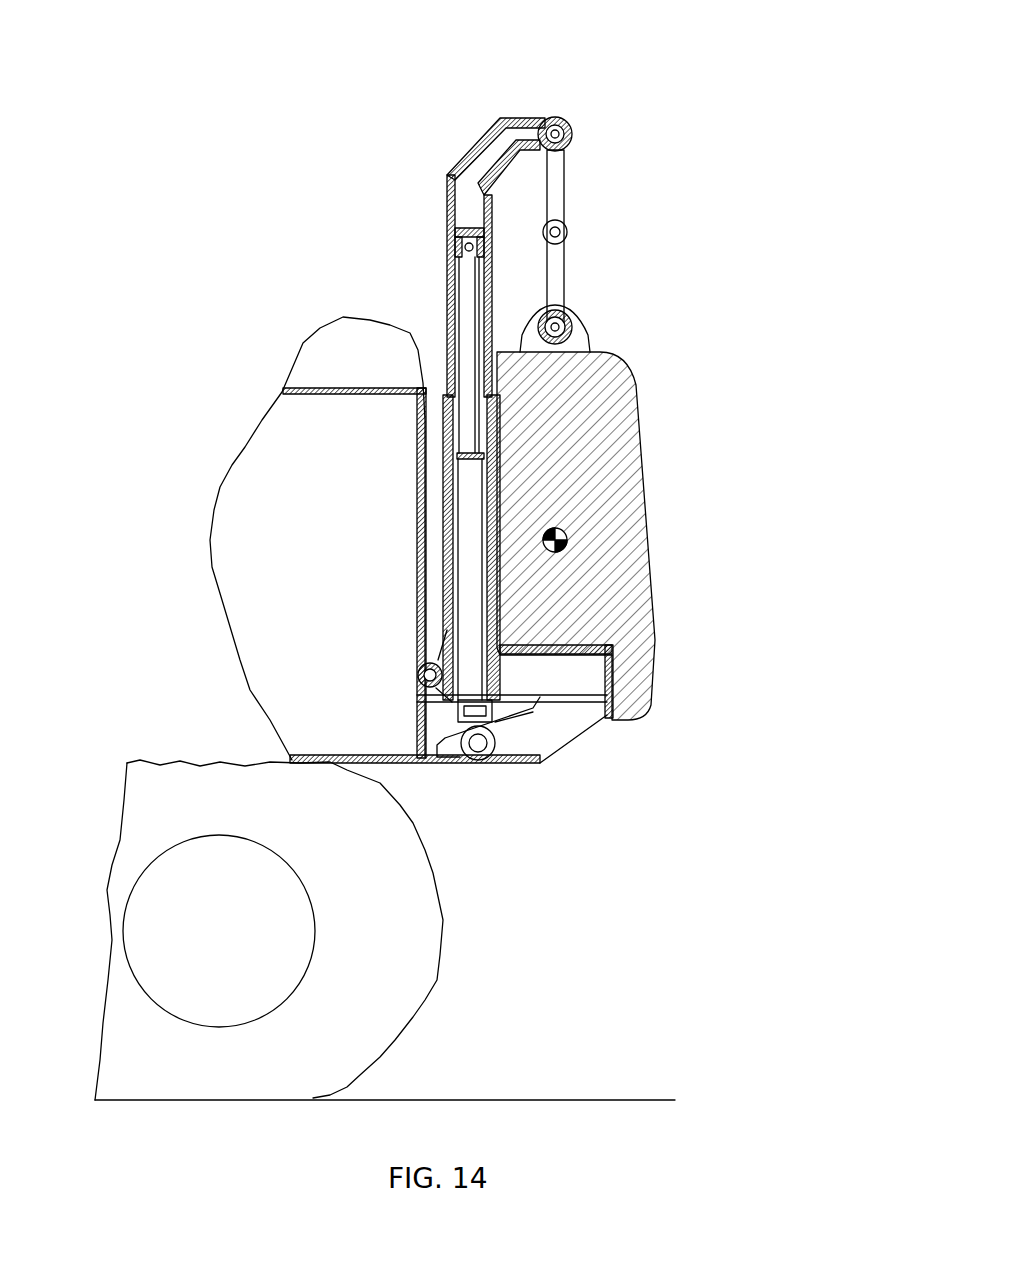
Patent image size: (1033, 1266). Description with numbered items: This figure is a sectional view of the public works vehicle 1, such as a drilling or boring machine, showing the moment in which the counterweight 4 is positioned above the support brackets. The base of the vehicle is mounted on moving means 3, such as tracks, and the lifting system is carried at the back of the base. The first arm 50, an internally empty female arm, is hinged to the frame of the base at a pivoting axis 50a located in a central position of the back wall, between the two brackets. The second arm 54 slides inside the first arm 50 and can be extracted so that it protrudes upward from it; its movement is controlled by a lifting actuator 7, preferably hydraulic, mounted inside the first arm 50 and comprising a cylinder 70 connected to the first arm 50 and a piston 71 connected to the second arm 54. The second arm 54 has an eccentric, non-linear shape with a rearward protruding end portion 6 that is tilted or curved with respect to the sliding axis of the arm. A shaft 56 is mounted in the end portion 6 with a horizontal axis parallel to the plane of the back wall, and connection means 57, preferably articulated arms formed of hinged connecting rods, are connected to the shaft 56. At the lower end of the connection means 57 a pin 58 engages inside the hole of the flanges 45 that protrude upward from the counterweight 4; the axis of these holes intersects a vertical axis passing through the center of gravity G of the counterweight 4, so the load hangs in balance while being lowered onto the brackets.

The public works vehicle 1 is at (283, 348).
The moving means 3 is at (170, 803).
The counterweight 4 is at (595, 468).
The end portion 6 is at (473, 147).
The lifting actuator 7 is at (452, 495).
The flanges 45 is at (585, 335).
The first arm 50 is at (448, 440).
The pivoting axis 50a is at (418, 676).
The second arm 54 is at (452, 300).
The shaft 56 is at (575, 133).
The connection means 57 is at (575, 231).
The pin 58 is at (578, 322).
The cylinder 70 is at (470, 545).
The piston 71 is at (470, 345).
The center of gravity G is at (565, 540).